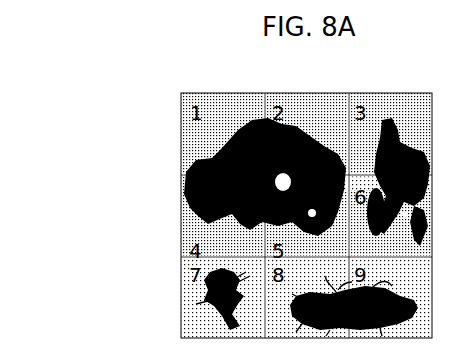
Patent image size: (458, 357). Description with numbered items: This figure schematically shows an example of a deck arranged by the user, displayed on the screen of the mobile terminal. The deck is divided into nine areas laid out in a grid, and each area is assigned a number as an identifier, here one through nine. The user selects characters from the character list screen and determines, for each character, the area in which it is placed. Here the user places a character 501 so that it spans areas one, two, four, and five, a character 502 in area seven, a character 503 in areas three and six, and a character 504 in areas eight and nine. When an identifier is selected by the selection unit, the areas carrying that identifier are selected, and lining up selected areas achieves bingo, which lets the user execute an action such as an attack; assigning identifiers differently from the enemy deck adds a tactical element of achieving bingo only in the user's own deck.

The character 501 is at (182, 184).
The character 502 is at (190, 303).
The character 503 is at (392, 104).
The character 504 is at (417, 308).